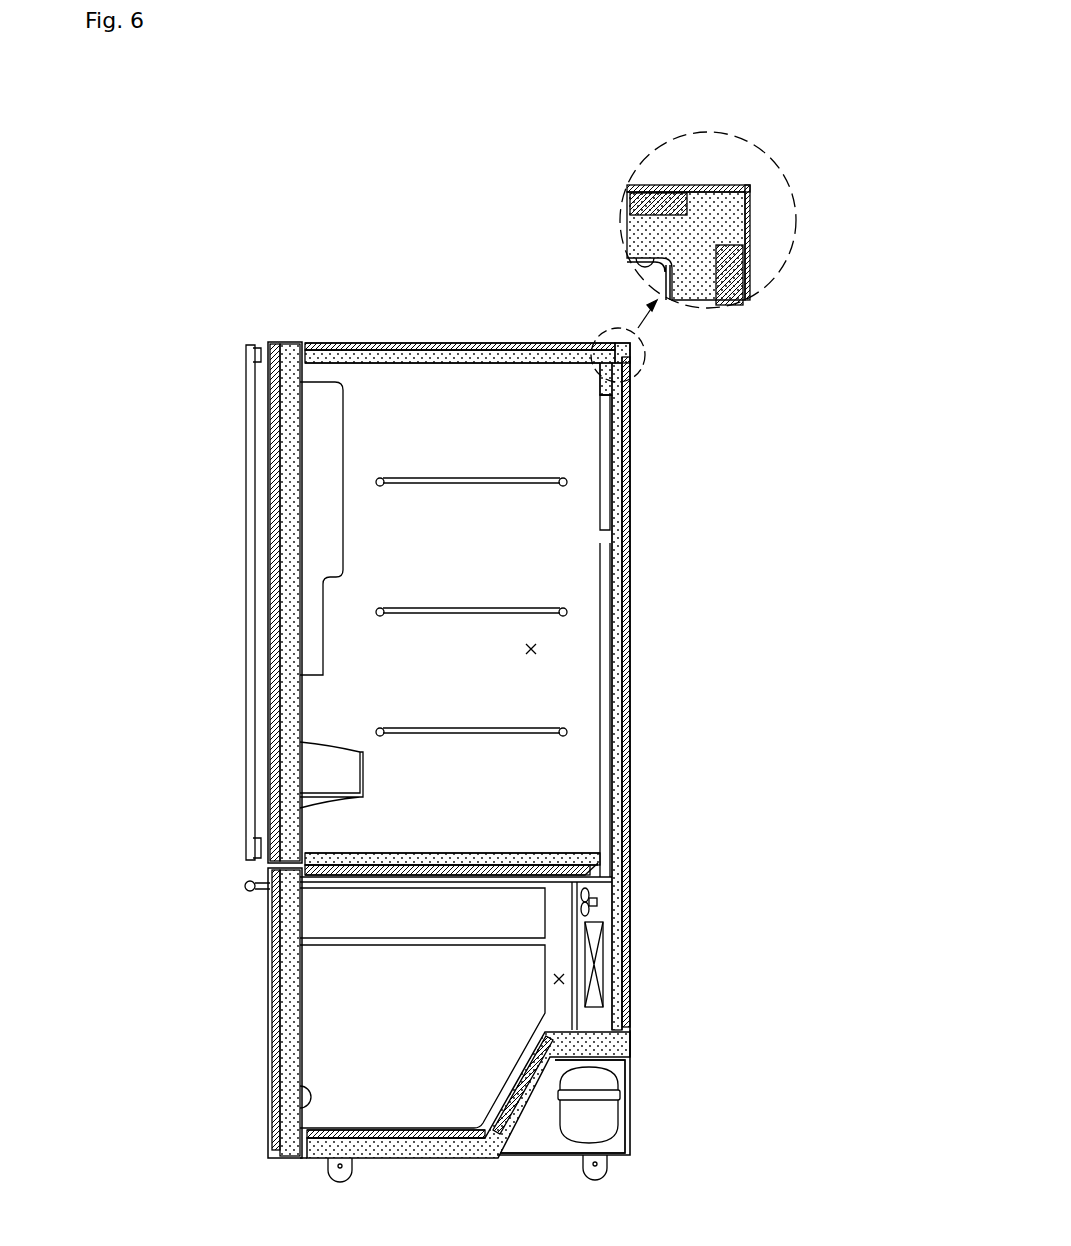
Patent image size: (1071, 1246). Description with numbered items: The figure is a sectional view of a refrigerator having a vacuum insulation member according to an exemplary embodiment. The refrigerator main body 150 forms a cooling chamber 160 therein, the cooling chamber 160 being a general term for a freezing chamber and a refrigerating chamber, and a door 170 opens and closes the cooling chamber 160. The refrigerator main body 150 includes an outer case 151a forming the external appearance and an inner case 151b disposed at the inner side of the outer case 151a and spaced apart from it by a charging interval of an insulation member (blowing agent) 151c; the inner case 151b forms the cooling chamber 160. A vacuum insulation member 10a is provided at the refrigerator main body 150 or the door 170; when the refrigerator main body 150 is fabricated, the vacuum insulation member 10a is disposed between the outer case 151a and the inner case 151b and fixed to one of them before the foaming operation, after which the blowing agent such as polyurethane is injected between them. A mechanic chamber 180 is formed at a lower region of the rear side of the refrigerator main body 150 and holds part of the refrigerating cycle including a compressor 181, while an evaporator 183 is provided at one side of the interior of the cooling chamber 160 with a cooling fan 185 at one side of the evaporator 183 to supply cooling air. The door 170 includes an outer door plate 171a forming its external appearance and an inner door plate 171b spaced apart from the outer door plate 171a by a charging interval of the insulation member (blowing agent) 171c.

The vacuum insulation member 10a is at (462, 343).
The refrigerator main body 150 is at (669, 177).
The outer case 151a is at (680, 185).
The inner case 151b is at (660, 258).
The insulation member (blowing agent) 151c is at (710, 220).
The cooling chamber 160 is at (536, 648).
The door 170 is at (197, 751).
The outer door plate 171a is at (270, 1018).
The inner door plate 171b is at (300, 1113).
The insulation member (blowing agent) 171c is at (280, 1066).
The mechanic chamber 180 is at (615, 1078).
The compressor 181 is at (605, 1117).
The evaporator 183 is at (603, 945).
The cooling fan 185 is at (600, 902).